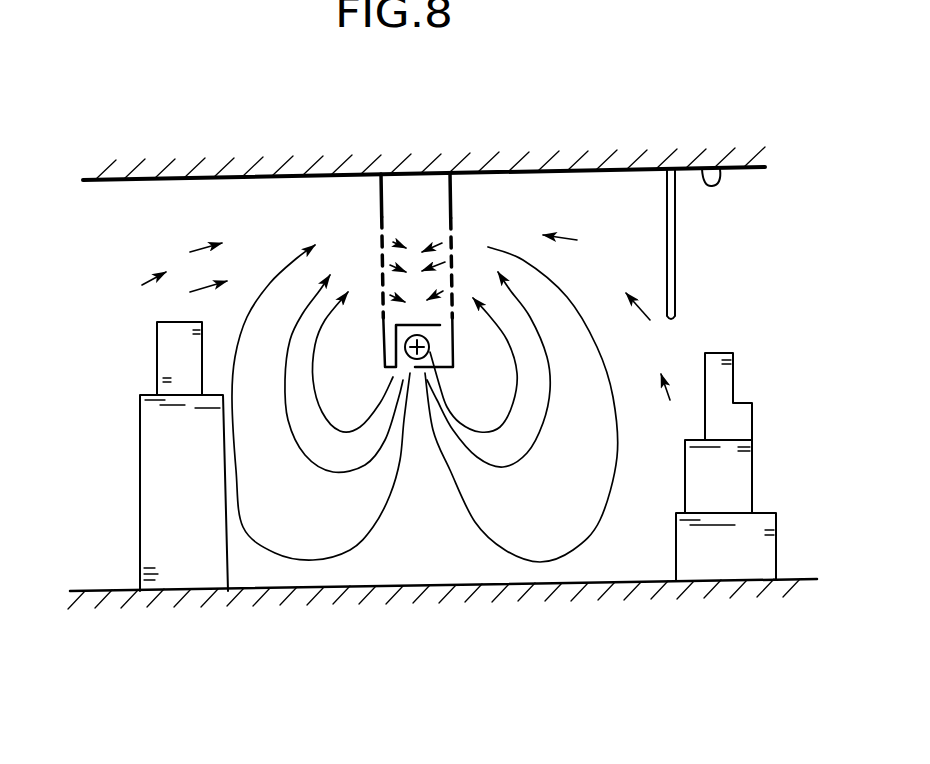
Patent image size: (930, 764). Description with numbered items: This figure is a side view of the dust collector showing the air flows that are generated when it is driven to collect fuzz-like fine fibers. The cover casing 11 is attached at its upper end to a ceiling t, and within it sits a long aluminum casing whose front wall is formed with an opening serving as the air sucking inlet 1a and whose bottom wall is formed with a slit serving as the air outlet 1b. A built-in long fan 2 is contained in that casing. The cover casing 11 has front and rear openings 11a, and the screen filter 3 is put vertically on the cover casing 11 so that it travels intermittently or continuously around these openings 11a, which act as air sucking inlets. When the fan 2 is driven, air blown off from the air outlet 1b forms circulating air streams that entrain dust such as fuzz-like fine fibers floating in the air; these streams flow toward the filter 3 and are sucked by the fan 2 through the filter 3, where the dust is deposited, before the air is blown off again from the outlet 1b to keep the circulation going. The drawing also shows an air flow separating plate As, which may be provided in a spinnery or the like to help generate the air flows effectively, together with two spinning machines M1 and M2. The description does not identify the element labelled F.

The cover casing 11 is at (388, 345).
The screen filter 3 is at (383, 320).
The openings 11a is at (447, 225).
The air sucking inlet 1a is at (440, 343).
The air outlet 1b is at (410, 373).
The long fan 2 is at (420, 387).
The ceiling t is at (718, 167).
The air flow separating plate As is at (676, 268).
The spinning machine M1 is at (153, 440).
The spinning machine M2 is at (740, 421).
The base floor F is at (805, 590).